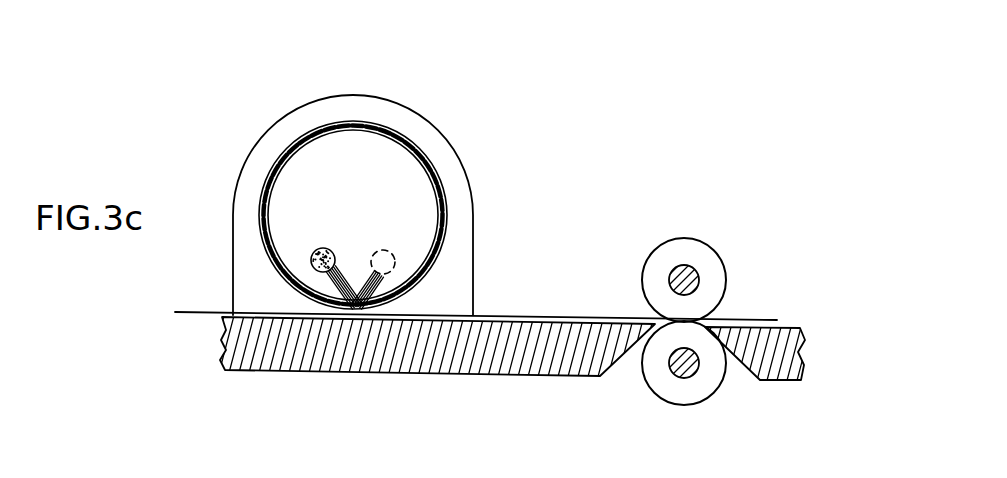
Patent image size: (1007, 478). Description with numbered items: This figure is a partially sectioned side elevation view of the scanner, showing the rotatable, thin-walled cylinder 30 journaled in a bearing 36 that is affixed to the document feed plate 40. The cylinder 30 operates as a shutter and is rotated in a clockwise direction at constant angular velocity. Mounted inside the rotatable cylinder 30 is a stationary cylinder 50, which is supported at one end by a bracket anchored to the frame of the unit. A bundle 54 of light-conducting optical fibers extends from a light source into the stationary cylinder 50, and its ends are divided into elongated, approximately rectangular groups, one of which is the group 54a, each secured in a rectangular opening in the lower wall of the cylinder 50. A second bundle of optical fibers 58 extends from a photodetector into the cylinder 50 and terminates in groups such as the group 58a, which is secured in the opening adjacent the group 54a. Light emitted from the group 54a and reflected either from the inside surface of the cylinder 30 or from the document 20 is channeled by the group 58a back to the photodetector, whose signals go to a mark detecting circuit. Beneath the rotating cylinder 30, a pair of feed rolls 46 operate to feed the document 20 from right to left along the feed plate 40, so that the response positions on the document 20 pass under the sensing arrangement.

The bearing 36 is at (403, 106).
The rotatable thin-walled cylinder 30 is at (417, 150).
The stationary cylinder 50 is at (325, 188).
The bundle of optical fibers 54 is at (316, 250).
The group of optical fibers 54a is at (328, 283).
The bundle of optical fibers 58 is at (385, 249).
The group of optical fibers 58a is at (384, 284).
The document 20 is at (520, 317).
The document feed plate 40 is at (801, 331).
The feed rolls 46 is at (723, 264).